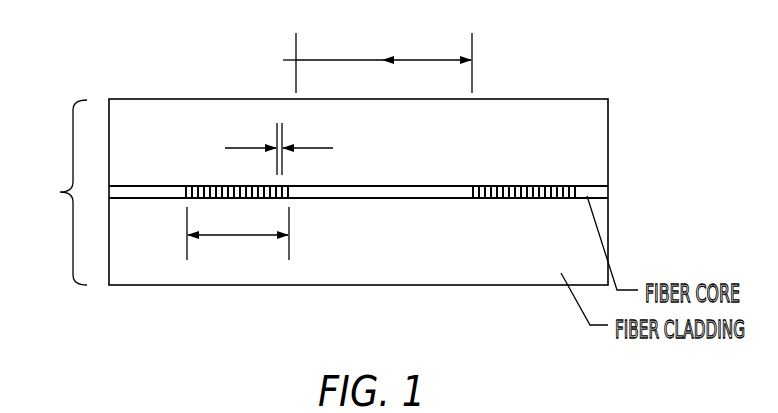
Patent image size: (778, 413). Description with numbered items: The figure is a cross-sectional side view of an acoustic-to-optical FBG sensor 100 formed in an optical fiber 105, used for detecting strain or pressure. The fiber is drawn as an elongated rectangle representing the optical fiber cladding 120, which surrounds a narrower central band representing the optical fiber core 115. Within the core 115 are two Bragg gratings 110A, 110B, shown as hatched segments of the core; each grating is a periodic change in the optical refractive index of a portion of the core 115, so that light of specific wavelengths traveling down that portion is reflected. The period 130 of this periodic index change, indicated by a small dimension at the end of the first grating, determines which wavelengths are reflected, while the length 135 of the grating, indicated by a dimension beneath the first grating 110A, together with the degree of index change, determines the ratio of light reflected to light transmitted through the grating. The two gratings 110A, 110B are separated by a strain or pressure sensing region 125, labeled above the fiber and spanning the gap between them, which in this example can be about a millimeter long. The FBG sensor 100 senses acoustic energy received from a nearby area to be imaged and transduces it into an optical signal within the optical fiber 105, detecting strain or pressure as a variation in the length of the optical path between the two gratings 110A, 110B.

The FBG sensor 100 is at (638, 55).
The optical fiber 105 is at (54, 192).
The Bragg grating 110A is at (203, 184).
The Bragg grating 110B is at (528, 184).
The optical fiber core 115 is at (609, 193).
The optical fiber cladding 120 is at (609, 133).
The strain or pressure sensing region 125 is at (383, 60).
The period 130 is at (317, 148).
The length of the grating 135 is at (241, 237).